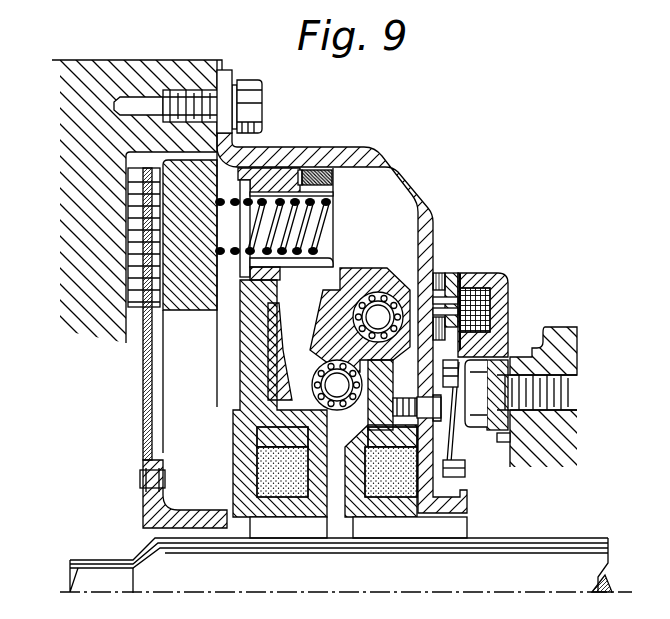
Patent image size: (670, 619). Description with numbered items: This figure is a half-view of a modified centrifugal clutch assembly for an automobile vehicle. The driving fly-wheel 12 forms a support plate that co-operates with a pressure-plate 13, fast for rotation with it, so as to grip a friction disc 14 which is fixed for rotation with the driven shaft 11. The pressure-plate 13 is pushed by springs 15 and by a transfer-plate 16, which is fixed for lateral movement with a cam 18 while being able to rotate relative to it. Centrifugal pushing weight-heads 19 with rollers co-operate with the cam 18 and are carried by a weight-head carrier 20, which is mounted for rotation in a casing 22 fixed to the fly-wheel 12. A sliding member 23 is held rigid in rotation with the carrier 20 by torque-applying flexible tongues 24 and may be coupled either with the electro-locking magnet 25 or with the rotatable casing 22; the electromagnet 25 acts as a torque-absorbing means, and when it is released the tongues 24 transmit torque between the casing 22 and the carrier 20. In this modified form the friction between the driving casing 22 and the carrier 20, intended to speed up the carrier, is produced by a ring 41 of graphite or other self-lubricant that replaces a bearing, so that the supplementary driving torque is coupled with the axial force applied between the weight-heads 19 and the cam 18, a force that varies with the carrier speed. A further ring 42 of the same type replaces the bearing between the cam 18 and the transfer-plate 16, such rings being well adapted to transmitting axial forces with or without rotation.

The driven shaft 11 is at (78, 562).
The fly-wheel 12 is at (118, 310).
The pressure-plate 13 is at (200, 305).
The friction disc 14 is at (133, 223).
The springs 15 is at (280, 187).
The transfer-plate 16 is at (245, 372).
The cam 18 is at (290, 397).
The centrifugal pushing weight-heads 19 is at (340, 298).
The weight-head carrier 20 is at (417, 513).
The casing 22 is at (400, 167).
The sliding member 23 is at (448, 273).
The flexible tongues 24 is at (453, 435).
The electro-locking magnet 25 is at (488, 272).
The ring 41 is at (388, 487).
The ring 42 is at (285, 480).